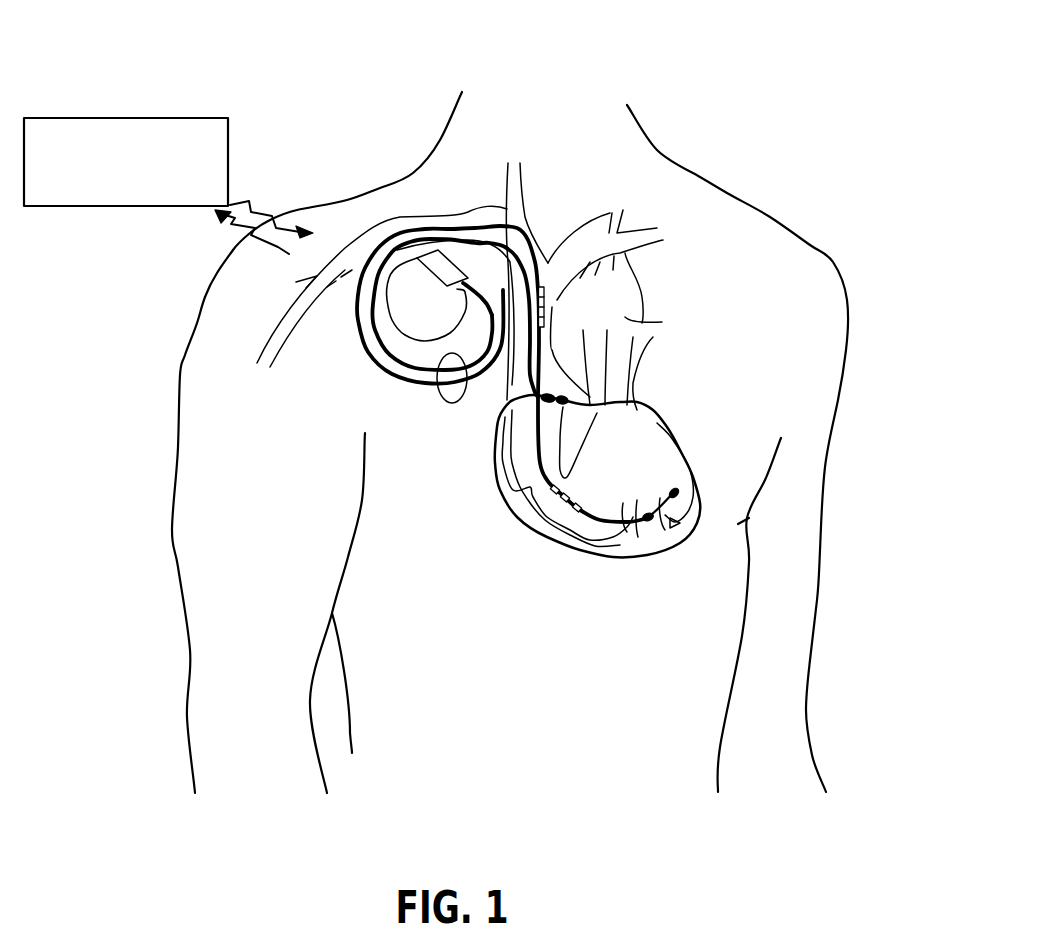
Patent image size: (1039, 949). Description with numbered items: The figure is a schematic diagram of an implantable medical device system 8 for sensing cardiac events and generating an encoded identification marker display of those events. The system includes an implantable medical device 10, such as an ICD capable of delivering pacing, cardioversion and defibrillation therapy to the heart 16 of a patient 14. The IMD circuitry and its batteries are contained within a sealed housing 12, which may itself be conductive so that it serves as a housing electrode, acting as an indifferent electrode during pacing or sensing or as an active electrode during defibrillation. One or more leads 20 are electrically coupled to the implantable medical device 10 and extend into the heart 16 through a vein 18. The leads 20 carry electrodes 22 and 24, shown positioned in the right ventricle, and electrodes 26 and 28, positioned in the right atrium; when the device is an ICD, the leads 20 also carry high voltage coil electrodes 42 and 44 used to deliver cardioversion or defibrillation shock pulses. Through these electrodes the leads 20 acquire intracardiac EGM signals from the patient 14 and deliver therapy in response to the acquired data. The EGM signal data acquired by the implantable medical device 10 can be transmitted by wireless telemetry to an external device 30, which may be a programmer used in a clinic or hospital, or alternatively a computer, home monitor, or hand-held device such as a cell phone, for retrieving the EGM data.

The implantable medical device system 8 is at (470, 27).
The implantable medical device 10 is at (417, 317).
The housing 12 is at (387, 300).
The patient 14 is at (727, 193).
The heart 16 is at (577, 547).
The vein 18 is at (343, 253).
The leads 20 is at (447, 403).
The electrode 22 is at (687, 497).
The electrode 24 is at (663, 517).
The electrode 26 is at (537, 487).
The electrode 28 is at (517, 400).
The external device 30 is at (116, 118).
The high voltage coil electrode 42 is at (553, 305).
The high voltage coil electrode 44 is at (553, 490).